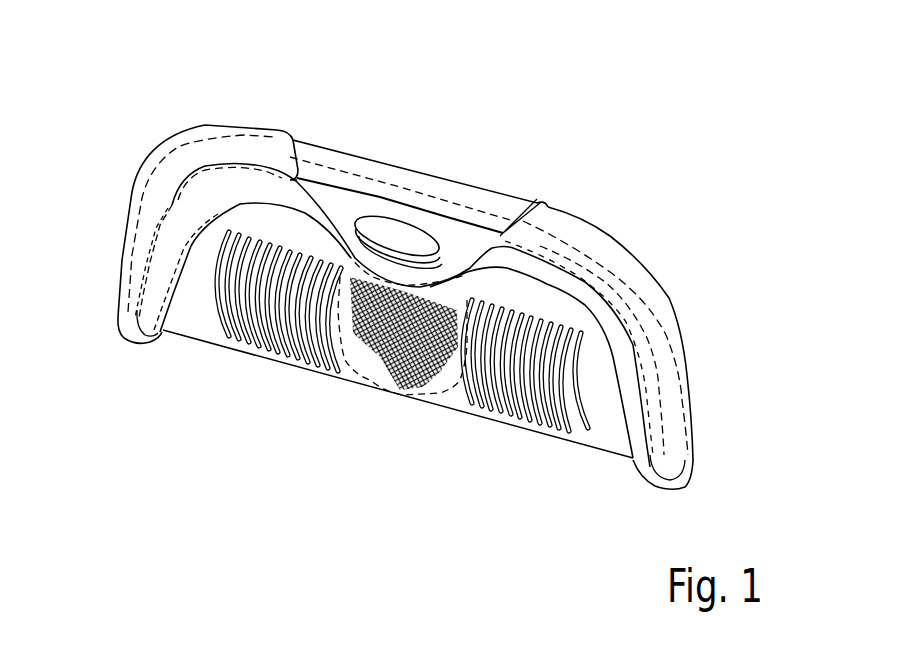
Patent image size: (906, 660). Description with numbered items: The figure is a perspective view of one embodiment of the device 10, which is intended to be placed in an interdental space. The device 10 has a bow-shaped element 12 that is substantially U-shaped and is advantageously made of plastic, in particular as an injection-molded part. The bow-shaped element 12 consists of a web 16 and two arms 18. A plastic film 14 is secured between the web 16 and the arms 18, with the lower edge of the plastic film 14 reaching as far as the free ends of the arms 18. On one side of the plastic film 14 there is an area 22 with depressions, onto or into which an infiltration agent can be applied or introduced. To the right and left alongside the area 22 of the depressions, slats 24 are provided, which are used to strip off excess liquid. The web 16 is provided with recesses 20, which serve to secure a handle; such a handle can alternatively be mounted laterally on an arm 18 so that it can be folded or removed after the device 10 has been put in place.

The device 10 is at (573, 183).
The bow-shaped element 12 is at (633, 272).
The plastic film 14 is at (197, 312).
The web 16 is at (225, 137).
The arms 18 is at (157, 277).
The recesses 20 is at (470, 198).
The area of depressions 22 is at (403, 386).
The slats 24 is at (282, 362).